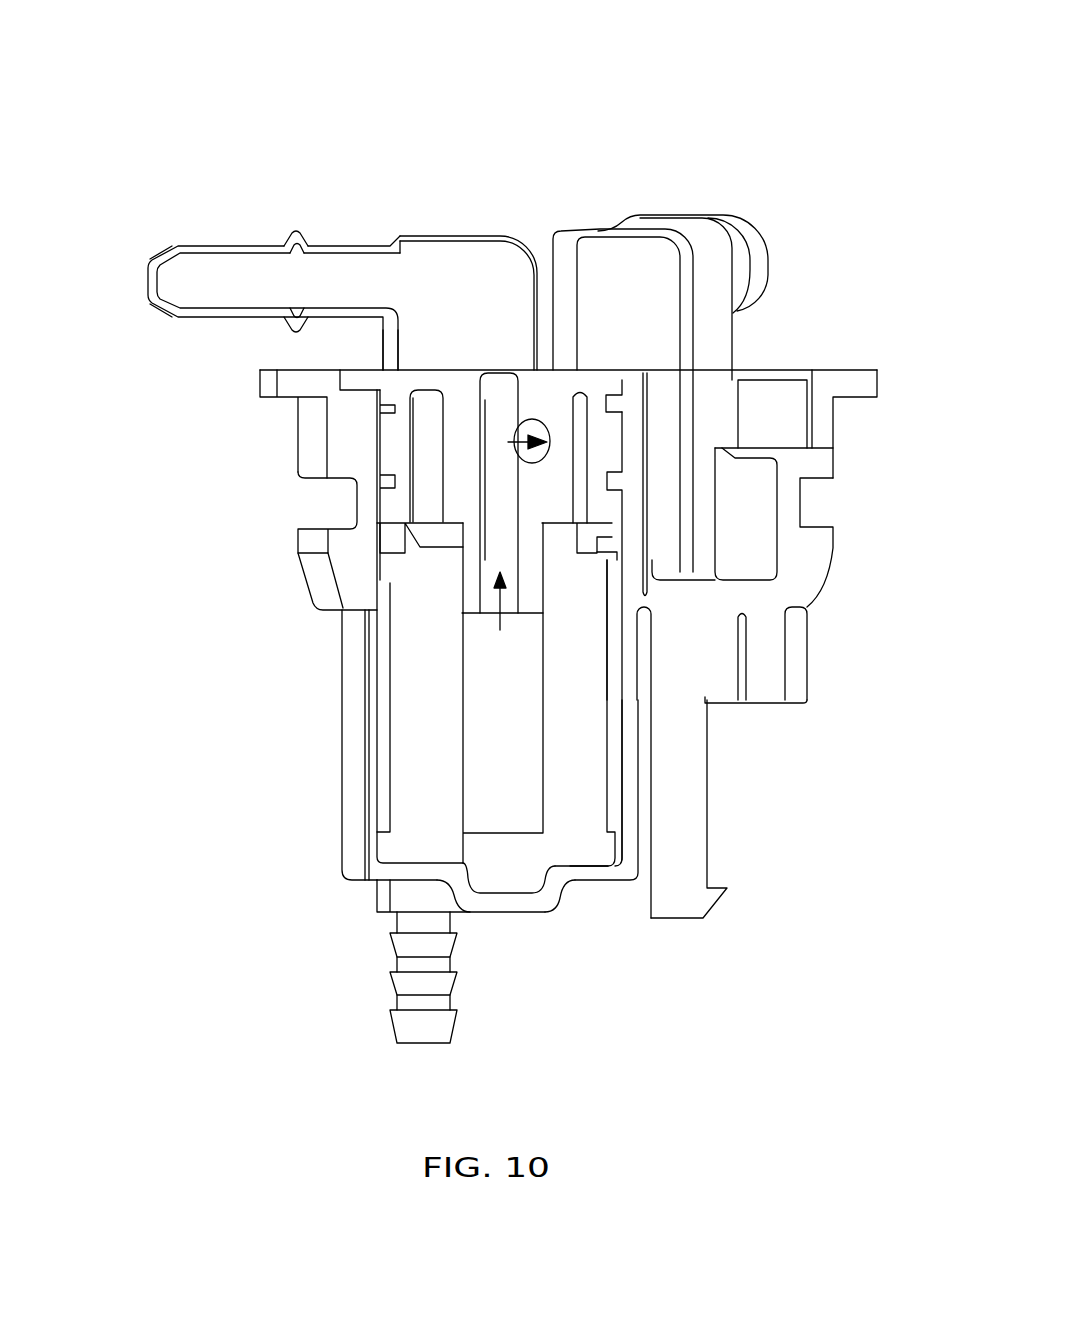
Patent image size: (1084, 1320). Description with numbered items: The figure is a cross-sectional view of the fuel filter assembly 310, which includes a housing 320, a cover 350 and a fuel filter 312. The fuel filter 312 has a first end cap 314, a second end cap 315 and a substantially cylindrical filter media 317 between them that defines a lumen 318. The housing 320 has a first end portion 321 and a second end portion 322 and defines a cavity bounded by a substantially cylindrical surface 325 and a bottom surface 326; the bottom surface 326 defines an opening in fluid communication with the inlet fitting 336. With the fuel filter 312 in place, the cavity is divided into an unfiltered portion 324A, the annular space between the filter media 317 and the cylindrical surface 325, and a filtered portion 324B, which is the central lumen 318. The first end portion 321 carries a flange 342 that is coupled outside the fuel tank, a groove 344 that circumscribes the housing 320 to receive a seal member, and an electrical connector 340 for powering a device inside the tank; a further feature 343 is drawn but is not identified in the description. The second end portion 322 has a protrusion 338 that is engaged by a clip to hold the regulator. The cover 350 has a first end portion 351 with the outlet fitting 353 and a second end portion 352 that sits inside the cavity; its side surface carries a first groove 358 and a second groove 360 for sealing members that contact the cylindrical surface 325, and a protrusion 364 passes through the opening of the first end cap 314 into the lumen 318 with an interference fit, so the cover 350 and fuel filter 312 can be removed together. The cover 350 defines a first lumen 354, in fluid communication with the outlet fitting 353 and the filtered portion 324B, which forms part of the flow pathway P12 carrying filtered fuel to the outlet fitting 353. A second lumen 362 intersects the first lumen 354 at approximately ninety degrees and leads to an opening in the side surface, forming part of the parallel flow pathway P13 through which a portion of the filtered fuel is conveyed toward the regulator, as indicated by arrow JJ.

The filter assembly 310 is at (140, 124).
The outlet fitting 353 is at (228, 245).
The cover 350 is at (400, 234).
The first end portion 351 is at (383, 339).
The electrical connector 340 is at (763, 228).
The flange 342 is at (858, 370).
The cap wall 343 is at (836, 452).
The groove 344 is at (820, 507).
The first end cap 314 is at (600, 573).
The first groove 358 is at (618, 398).
The second groove 360 is at (617, 483).
The first end portion 321 is at (302, 430).
The housing 320 is at (357, 772).
The second end portion 322 is at (350, 846).
The unfiltered portion 324A is at (372, 718).
The first lumen 354 is at (495, 507).
The second end portion 352 is at (472, 548).
The flow pathway P12 is at (490, 473).
The second lumen 362 is at (545, 432).
The flow pathway P13 is at (528, 437).
The arrow JJ is at (555, 116).
The protrusion 364 is at (472, 583).
The filtered portion 324B is at (477, 808).
The lumen 318 is at (467, 795).
The bottom surface 326 is at (513, 882).
The fuel filter 312 is at (582, 748).
The filter media 317 is at (600, 789).
The cylindrical surface 325 is at (638, 803).
The protrusion 338 is at (713, 902).
The second end cap 315 is at (570, 843).
The inlet fitting 336 is at (430, 1024).